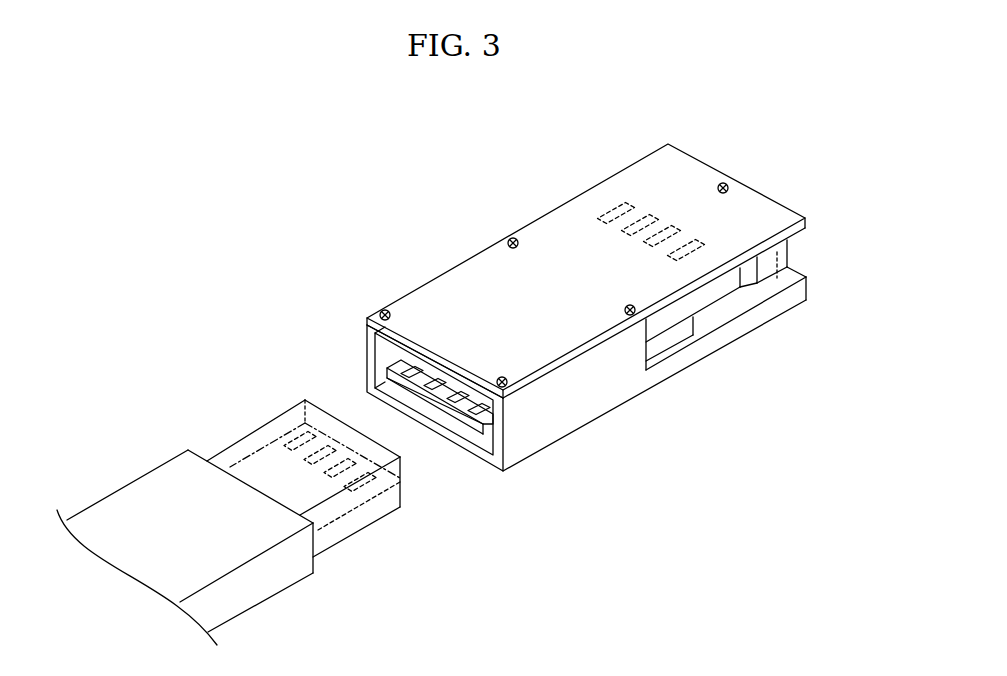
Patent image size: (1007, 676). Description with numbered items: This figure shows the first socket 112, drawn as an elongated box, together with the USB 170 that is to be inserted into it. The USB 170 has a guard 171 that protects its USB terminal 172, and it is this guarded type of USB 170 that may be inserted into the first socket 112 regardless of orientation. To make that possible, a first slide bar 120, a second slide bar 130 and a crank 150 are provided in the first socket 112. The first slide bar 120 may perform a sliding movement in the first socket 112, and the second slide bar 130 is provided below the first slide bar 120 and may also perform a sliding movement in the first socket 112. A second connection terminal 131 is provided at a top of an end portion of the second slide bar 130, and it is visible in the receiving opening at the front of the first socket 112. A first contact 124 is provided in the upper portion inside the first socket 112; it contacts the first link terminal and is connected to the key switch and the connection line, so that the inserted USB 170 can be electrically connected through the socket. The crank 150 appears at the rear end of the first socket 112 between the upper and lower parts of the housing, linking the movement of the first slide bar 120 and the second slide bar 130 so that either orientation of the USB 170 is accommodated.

The first socket 112 is at (543, 221).
The first slide bar 120 is at (715, 300).
The first contact 124 is at (618, 205).
The second slide bar 130 is at (660, 348).
The second connection terminal 131 is at (402, 363).
The crank 150 is at (797, 258).
The USB 170 is at (220, 502).
The guard 171 is at (235, 450).
The USB terminal 172 is at (290, 445).